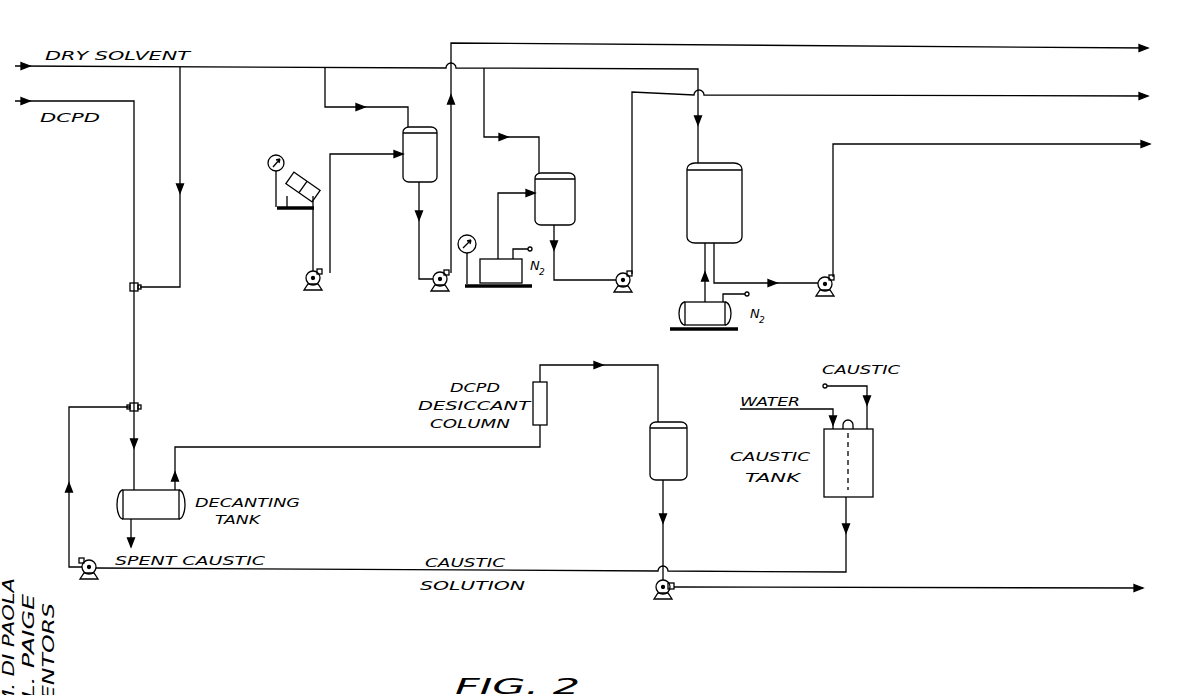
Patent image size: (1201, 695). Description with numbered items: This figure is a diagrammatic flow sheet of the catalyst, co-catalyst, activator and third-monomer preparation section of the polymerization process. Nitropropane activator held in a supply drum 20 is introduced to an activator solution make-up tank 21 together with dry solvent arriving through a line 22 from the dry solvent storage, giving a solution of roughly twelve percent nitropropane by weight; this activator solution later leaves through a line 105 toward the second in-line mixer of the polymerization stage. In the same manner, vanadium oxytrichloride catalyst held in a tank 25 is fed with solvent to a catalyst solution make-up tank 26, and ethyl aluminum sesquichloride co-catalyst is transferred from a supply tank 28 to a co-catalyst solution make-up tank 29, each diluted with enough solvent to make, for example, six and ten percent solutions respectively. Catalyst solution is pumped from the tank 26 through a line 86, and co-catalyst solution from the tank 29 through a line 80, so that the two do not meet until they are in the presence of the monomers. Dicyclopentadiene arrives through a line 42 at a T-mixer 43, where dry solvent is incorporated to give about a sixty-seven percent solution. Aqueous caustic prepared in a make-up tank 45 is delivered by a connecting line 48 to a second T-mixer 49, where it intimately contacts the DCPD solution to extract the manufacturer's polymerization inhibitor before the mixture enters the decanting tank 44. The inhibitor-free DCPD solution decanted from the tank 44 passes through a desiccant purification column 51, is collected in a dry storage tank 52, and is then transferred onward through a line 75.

The supply drum 20 is at (318, 182).
The activator solution make-up tank 21 is at (437, 100).
The dry solvent line 22 is at (240, 58).
The catalyst supply tank 25 is at (493, 284).
The catalyst solution make-up tank 26 is at (572, 166).
The co-catalyst supply tank 28 is at (701, 326).
The co-catalyst solution make-up tank 29 is at (717, 162).
The DCPD line 42 is at (131, 210).
The T-mixer 43 is at (129, 290).
The decanting tank 44 is at (161, 486).
The caustic make-up tank 45 is at (876, 464).
The connecting line 48 is at (383, 557).
The T-mixer 49 is at (141, 408).
The desiccant purification column 51 is at (547, 398).
The dry DCPD solution storage tank 52 is at (651, 448).
The dry DCPD solution line 75 is at (975, 577).
The co-catalyst solution line 80 is at (1014, 146).
The catalyst solution line 86 is at (985, 84).
The activator solution line 105 is at (945, 36).